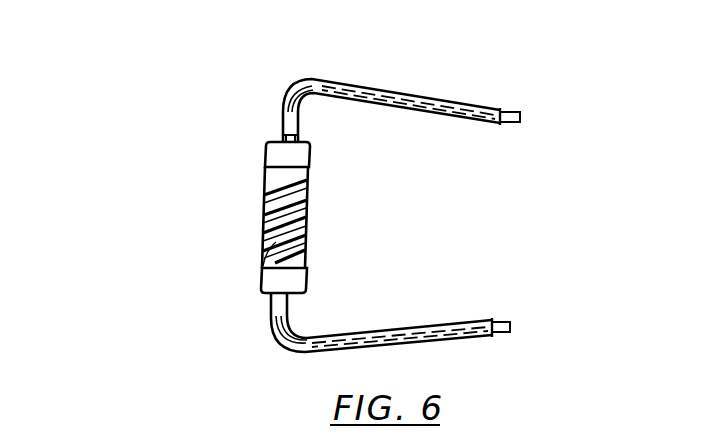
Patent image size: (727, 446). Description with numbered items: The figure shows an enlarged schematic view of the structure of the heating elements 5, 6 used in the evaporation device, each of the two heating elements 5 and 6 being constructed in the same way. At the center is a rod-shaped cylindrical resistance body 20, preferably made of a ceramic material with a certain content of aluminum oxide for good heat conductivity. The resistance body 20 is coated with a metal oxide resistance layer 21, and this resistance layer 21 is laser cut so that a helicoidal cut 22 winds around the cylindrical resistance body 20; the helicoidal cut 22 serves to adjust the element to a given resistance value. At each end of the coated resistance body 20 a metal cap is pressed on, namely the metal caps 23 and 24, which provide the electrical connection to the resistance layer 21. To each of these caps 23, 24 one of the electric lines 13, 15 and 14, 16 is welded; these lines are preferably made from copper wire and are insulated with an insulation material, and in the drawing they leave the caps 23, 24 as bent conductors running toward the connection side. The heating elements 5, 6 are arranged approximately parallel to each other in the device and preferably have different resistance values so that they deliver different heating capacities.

The heating element 5 is at (324, 186).
The heating element 6 is at (187, 216).
The electric line 13 is at (444, 80).
The electric line 15 is at (510, 110).
The electric line 14 is at (435, 295).
The electric line 16 is at (502, 322).
The resistance body 20 is at (310, 177).
The resistance layer 21 is at (306, 222).
The helicoidal cut 22 is at (265, 265).
The metal cap 23 is at (265, 145).
The metal cap 24 is at (292, 280).